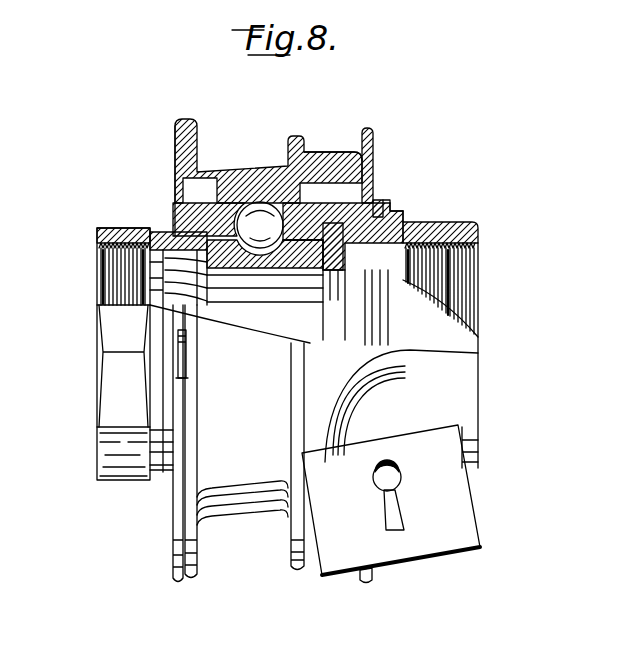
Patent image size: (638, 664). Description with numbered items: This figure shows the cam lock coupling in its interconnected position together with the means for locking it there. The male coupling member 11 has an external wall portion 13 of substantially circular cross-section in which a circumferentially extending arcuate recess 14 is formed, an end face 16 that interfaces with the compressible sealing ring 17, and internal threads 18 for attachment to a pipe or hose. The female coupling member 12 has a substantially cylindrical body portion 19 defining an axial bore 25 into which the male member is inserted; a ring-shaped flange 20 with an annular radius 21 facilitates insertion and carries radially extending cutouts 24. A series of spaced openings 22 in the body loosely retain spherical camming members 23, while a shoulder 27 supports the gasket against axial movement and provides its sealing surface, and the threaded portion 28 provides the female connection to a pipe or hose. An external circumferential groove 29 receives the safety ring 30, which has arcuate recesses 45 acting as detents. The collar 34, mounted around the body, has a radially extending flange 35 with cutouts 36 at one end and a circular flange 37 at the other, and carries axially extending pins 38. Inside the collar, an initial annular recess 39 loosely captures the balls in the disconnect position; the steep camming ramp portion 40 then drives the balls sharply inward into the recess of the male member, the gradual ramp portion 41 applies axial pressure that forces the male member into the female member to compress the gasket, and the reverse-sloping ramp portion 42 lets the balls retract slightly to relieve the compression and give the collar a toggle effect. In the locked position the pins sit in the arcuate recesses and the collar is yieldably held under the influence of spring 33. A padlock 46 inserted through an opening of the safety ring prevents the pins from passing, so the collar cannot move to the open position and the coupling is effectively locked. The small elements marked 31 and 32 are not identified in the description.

The male coupling member 11 is at (70, 213).
The female coupling member 12 is at (356, 600).
The external wall portion 13 is at (168, 477).
The arcuate recess 14 is at (215, 272).
The end face 16 is at (420, 288).
The sealing ring 17 is at (335, 235).
The internal threads 18 is at (103, 275).
The body portion 19 is at (472, 222).
The ring-shaped flange 20 is at (180, 584).
The annular radius 21 is at (175, 228).
The openings 22 is at (240, 212).
The camming members 23 is at (268, 210).
The cutouts 24 is at (180, 370).
The bore 25 is at (208, 232).
The shoulder 27 is at (407, 220).
The threaded portion 28 is at (463, 258).
The external circumferential groove 29 is at (378, 202).
The safety ring 30 is at (373, 578).
The step 31 is at (384, 212).
The step 32 is at (412, 215).
The spring 33 is at (380, 197).
The collar 34 is at (241, 528).
The radially extending flange 35 is at (190, 580).
The cutouts 36 is at (185, 378).
The circular flange 37 is at (296, 572).
The pins 38 is at (345, 157).
The initial annular recess 39 is at (180, 205).
The camming ramp portion 40 is at (212, 232).
The camming ramp portion 41 is at (222, 197).
The ramp portion 42 is at (255, 200).
The arcuate recesses 45 is at (366, 203).
The padlock 46 is at (447, 553).